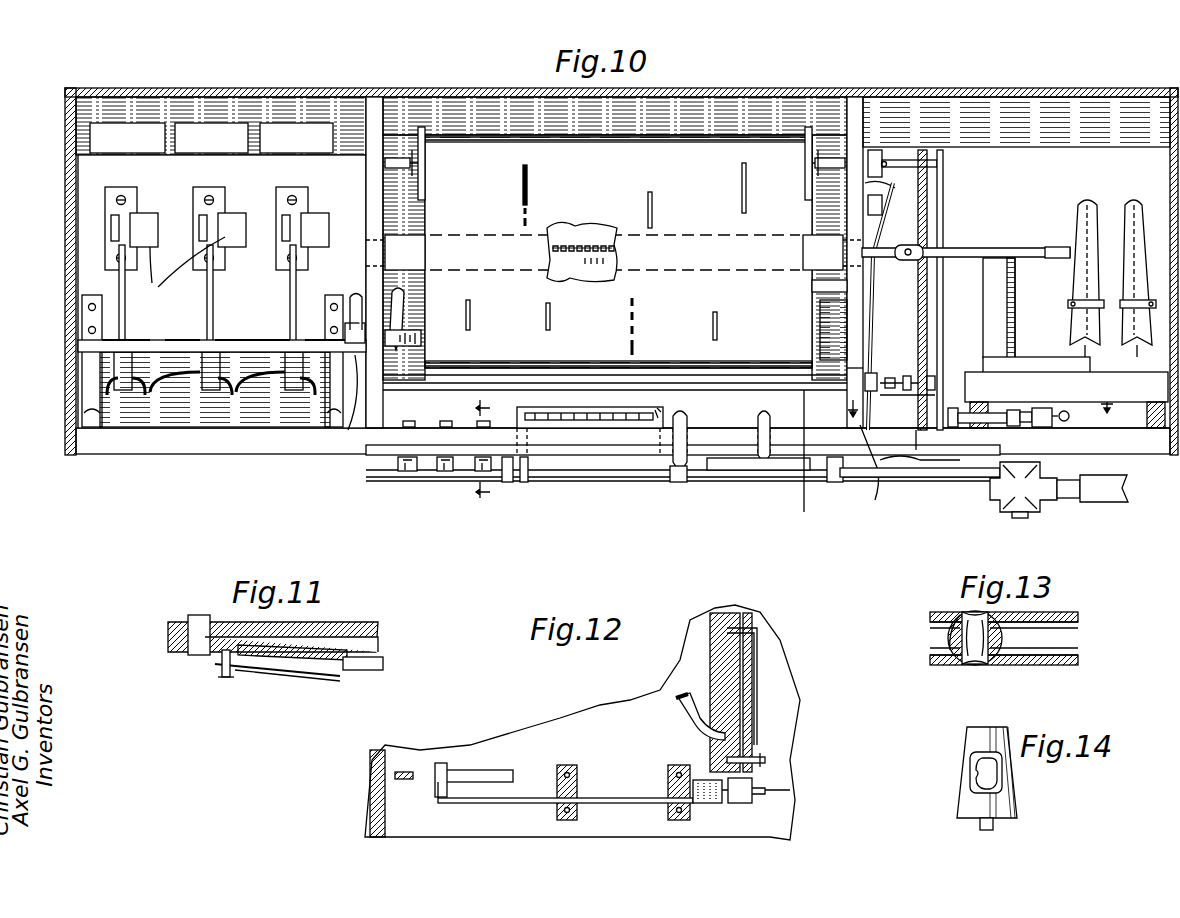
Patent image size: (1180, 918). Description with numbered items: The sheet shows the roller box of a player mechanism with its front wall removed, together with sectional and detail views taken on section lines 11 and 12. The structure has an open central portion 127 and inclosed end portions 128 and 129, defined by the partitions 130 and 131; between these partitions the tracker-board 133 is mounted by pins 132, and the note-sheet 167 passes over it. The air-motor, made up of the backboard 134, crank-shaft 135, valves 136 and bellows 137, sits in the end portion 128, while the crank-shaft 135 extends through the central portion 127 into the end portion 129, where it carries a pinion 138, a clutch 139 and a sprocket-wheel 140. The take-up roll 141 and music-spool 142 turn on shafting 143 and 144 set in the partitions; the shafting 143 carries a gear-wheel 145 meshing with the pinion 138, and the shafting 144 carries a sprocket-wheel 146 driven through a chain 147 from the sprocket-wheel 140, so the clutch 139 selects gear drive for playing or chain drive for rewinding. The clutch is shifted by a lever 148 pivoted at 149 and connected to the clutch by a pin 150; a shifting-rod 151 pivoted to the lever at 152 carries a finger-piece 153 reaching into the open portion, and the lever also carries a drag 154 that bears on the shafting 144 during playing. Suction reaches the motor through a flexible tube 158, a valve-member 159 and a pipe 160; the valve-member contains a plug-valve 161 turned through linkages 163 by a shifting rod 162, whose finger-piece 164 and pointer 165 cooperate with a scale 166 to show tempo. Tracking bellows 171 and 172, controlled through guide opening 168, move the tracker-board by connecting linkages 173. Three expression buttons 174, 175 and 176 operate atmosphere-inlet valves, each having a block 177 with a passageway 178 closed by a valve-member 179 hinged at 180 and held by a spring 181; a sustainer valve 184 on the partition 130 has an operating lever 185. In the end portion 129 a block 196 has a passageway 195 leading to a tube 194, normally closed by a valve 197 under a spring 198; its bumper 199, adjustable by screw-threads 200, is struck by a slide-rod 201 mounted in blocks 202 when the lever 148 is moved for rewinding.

In FIG. 10, the section line 11 is at (492, 453).
In FIG. 10, the section line 12 is at (982, 405).
In FIG. 10, the open central portion 127 is at (478, 112).
In FIG. 10, the inclosed end portion 128 is at (193, 101).
In FIG. 10, the inclosed end portion 129 is at (1003, 117).
In FIG. 10, the partition 130 is at (373, 101).
In FIG. 10, the partition 131 is at (857, 104).
In FIG. 10, the pin 132 is at (366, 258).
In FIG. 10, the tracker-board 133 is at (405, 242).
In FIG. 10, the backboard 134 is at (95, 290).
In FIG. 10, the crank-shaft 135 is at (175, 386).
In FIG. 10, the valve 136 is at (184, 270).
In FIG. 10, the bellows 137 is at (203, 147).
In FIG. 10, the pinion 138 is at (860, 375).
In FIG. 10, the clutch 139 is at (916, 452).
In FIG. 10, the sprocket-wheel 140 is at (920, 384).
In FIG. 10, the take-up roll 141 is at (806, 461).
In FIG. 10, the music-spool 142 is at (424, 128).
In FIG. 10, the shafting 143 is at (830, 333).
In FIG. 10, the shafting 144 is at (822, 160).
In FIG. 10, the gear-wheel 145 is at (835, 286).
In FIG. 10, the sprocket-wheel 146 is at (937, 165).
In FIG. 10, the chain 147 is at (944, 202).
In FIG. 10, the lever 148 is at (885, 318).
In FIG. 12, the lever 148 is at (406, 780).
In FIG. 10, the pivot 149 is at (922, 254).
In FIG. 10, the pin 150 is at (897, 377).
In FIG. 10, the shifting-rod 151 is at (780, 466).
In FIG. 10, the pivot 152 is at (878, 460).
In FIG. 10, the finger-piece 153 is at (768, 418).
In FIG. 10, the drag 154 is at (925, 184).
In FIG. 10, the flexible tube 158 is at (1112, 500).
In FIG. 10, the valve-member 159 is at (1025, 500).
In FIG. 13, the valve-member 159 is at (984, 660).
In FIG. 10, the pipe 160 is at (1013, 320).
In FIG. 13, the plug-valve 161 is at (958, 650).
In FIG. 14, the plug-valve 161 is at (965, 803).
In FIG. 10, the shifting rod 162 is at (640, 481).
In FIG. 10, the linkage 163 is at (998, 478).
In FIG. 10, the finger-piece 164 is at (700, 407).
In FIG. 10, the pointer 165 is at (523, 472).
In FIG. 10, the scale 166 is at (596, 413).
In FIG. 10, the note-sheet 167 is at (710, 150).
In FIG. 10, the guide opening 168 is at (614, 261).
In FIG. 10, the bellows 171 is at (1140, 205).
In FIG. 10, the bellows 172 is at (1075, 218).
In FIG. 10, the connecting linkage 173 is at (1037, 250).
In FIG. 10, the expression button 174 is at (416, 412).
In FIG. 10, the expression button 175 is at (461, 411).
In FIG. 10, the expression button 176 is at (480, 430).
In FIG. 11, the block 177 is at (322, 668).
In FIG. 11, the passageway 178 is at (332, 657).
In FIG. 11, the valve-member 179 is at (258, 666).
In FIG. 11, the hinge 180 is at (355, 670).
In FIG. 11, the spring 181 is at (290, 678).
In FIG. 10, the valve 184 is at (360, 428).
In FIG. 10, the operating lever 185 is at (405, 298).
In FIG. 12, the tube 194 is at (700, 733).
In FIG. 12, the passageway 195 is at (765, 760).
In FIG. 10, the block 196 is at (1050, 427).
In FIG. 12, the block 196 is at (735, 665).
In FIG. 12, the valve 197 is at (752, 723).
In FIG. 12, the spring 198 is at (760, 700).
In FIG. 10, the bumper 199 is at (1020, 426).
In FIG. 12, the bumper 199 is at (716, 803).
In FIG. 12, the screw-threads 200 is at (772, 795).
In FIG. 10, the slide-rod 201 is at (985, 425).
In FIG. 12, the slide-rod 201 is at (626, 804).
In FIG. 10, the block 202 is at (953, 428).
In FIG. 12, the block 202 is at (666, 776).